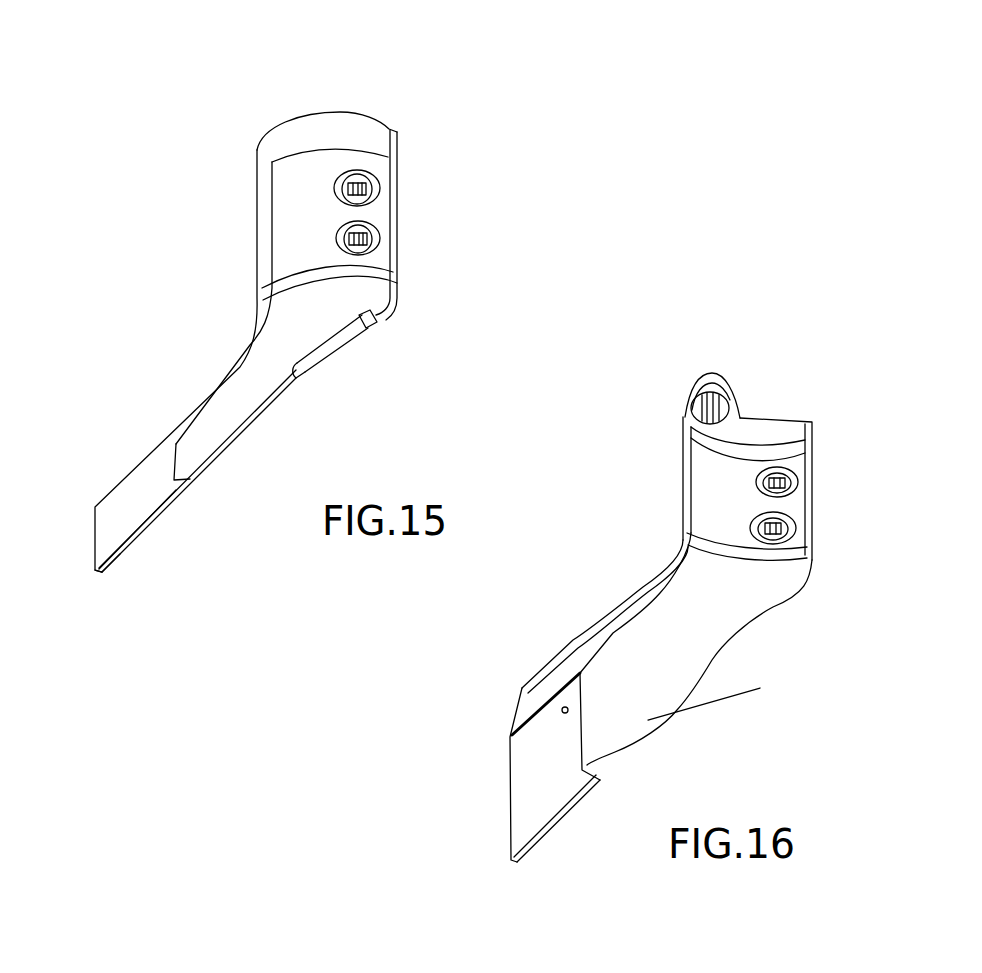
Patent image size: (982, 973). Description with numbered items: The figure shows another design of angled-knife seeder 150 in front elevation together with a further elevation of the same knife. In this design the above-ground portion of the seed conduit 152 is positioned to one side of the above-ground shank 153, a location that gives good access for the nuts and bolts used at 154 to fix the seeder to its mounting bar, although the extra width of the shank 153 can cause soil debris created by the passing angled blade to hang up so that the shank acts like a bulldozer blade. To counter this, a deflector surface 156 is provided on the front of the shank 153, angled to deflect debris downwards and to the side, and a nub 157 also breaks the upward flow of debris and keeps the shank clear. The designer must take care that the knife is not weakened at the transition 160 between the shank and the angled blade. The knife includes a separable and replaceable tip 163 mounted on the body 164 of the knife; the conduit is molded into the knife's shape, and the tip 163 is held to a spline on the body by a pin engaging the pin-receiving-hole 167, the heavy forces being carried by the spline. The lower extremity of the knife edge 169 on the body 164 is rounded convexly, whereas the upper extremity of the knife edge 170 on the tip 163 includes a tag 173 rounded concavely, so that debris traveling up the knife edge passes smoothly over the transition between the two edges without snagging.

In FIG. 15, the angled-knife seeder 150 is at (203, 248).
In FIG. 15, the seed conduit 152 is at (273, 187).
In FIG. 16, the seed conduit 152 is at (686, 410).
In FIG. 15, the above-ground shank 153 is at (323, 170).
In FIG. 15, the nuts and bolts 154 is at (383, 190).
In FIG. 15, the deflector surface 156 is at (320, 365).
In FIG. 15, the nub 157 is at (377, 327).
In FIG. 15, the transition 160 is at (283, 330).
In FIG. 15, the replaceable tip 163 is at (125, 523).
In FIG. 16, the replaceable tip 163 is at (512, 774).
In FIG. 15, the body 164 is at (202, 443).
In FIG. 16, the body 164 is at (608, 682).
In FIG. 15, the pin-receiving-hole 167 is at (160, 460).
In FIG. 15, the knife edge 169 is at (237, 440).
In FIG. 16, the knife edge 169 is at (653, 733).
In FIG. 15, the knife edge 170 is at (120, 567).
In FIG. 16, the knife edge 170 is at (547, 840).
In FIG. 16, the tag 173 is at (731, 693).